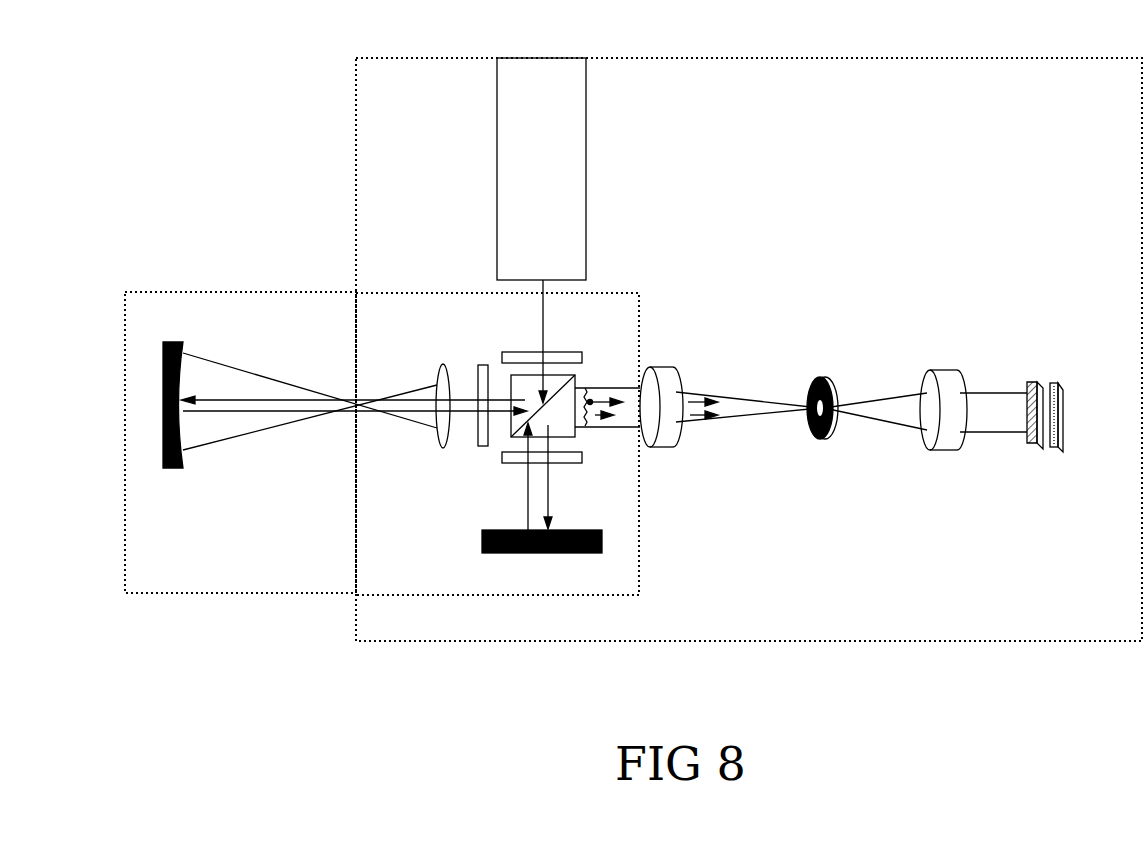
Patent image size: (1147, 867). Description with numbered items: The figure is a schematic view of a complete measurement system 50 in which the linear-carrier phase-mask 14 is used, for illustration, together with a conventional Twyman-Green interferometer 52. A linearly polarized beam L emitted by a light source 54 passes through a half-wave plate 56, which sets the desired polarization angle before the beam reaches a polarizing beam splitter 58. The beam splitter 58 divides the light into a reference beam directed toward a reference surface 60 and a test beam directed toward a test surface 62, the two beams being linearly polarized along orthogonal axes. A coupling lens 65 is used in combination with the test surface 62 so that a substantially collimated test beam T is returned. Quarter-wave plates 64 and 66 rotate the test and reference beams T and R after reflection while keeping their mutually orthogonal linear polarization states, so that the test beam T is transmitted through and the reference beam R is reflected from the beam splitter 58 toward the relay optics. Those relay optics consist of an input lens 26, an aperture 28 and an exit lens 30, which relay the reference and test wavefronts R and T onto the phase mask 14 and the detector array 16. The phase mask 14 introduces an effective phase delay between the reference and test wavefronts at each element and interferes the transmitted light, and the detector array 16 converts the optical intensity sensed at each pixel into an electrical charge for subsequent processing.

The measurement system 50 is at (749, 323).
The Twyman-Green interferometer 52 is at (648, 308).
The light source 54 is at (566, 169).
The half-wave plate 56 is at (566, 338).
The polarizing beam splitter 58 is at (508, 438).
The reference surface 60 is at (515, 559).
The test surface 62 is at (183, 345).
The quarter-wave plate 64 is at (578, 465).
The coupling lens 65 is at (410, 425).
The quarter-wave plate 66 is at (473, 385).
The input lens 26 is at (663, 440).
The aperture 28 is at (825, 440).
The exit lens 30 is at (940, 447).
The linear-carrier phase mask 14 is at (1023, 436).
The detector array 16 is at (1078, 431).
The linearly polarized beam L is at (540, 340).
The reference beam R is at (589, 388).
The test beam T is at (585, 430).